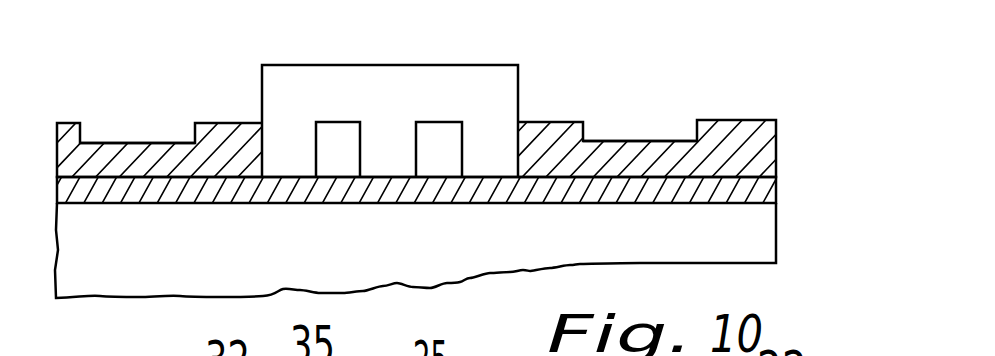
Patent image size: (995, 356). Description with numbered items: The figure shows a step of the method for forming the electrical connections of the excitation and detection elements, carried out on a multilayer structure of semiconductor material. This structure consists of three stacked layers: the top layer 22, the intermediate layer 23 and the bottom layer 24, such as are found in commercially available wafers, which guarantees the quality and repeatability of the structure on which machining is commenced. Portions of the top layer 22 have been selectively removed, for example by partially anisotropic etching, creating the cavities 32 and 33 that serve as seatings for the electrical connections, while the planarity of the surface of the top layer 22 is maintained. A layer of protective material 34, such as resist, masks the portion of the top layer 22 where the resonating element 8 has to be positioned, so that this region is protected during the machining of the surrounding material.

The resonating element 8 is at (338, 137).
The top layer 22 is at (760, 153).
The intermediate layer 23 is at (770, 187).
The bottom layer 24 is at (760, 240).
The cavity 32 is at (137, 137).
The cavity 33 is at (622, 137).
The layer of protective material 34 is at (375, 65).